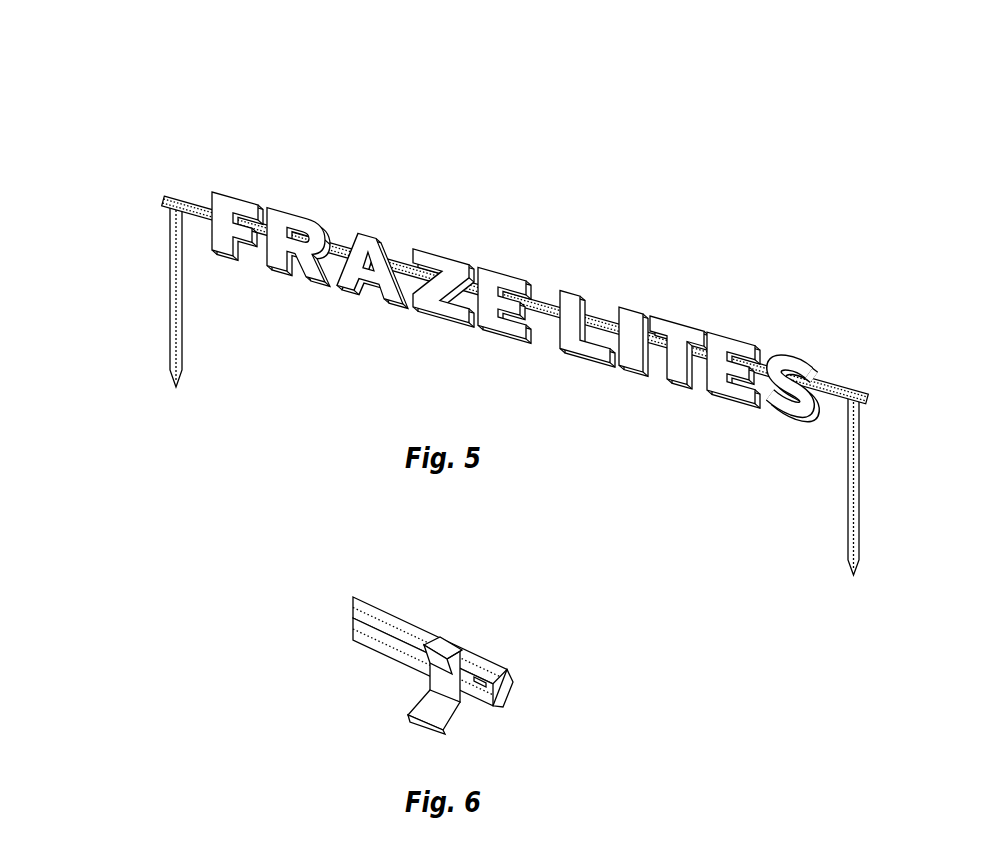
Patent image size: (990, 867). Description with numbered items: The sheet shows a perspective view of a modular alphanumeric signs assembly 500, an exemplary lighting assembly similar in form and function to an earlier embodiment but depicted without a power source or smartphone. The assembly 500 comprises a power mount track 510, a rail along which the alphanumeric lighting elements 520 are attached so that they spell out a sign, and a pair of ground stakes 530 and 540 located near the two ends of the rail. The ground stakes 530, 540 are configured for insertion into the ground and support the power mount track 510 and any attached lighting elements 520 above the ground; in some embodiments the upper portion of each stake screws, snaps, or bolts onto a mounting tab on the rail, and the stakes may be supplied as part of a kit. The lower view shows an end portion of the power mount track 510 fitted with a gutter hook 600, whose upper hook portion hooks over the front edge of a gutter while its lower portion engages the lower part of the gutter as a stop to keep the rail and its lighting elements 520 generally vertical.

In FIG. 5, the modular alphanumeric signs assembly 500 is at (504, 309).
In FIG. 5, the power mount track 510 is at (554, 300).
In FIG. 6, the power mount track 510 is at (433, 640).
In FIG. 5, the alphanumeric lighting elements 520 is at (492, 285).
In FIG. 5, the ground stake 530 is at (231, 296).
In FIG. 5, the ground stake 540 is at (909, 486).
In FIG. 6, the gutter hook 600 is at (382, 685).